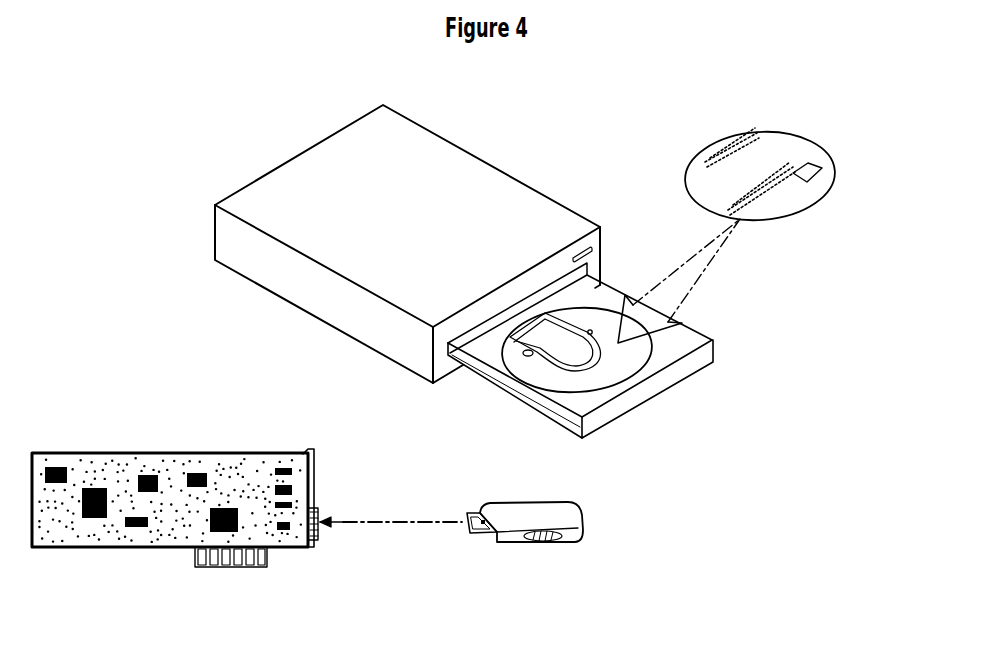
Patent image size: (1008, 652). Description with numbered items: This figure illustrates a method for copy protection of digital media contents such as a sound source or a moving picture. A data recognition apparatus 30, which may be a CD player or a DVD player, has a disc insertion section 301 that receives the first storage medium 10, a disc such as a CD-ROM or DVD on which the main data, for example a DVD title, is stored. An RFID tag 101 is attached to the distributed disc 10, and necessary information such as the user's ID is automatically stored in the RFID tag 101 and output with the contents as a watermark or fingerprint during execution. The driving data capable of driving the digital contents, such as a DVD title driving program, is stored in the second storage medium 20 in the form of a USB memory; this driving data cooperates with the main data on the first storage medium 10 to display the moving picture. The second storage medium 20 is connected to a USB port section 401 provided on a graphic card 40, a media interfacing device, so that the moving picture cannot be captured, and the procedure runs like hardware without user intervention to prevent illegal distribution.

The data recognition apparatus 30 is at (483, 160).
The first storage medium 10 is at (700, 151).
The RFID tag 101 is at (818, 166).
The disc insertion section 301 is at (683, 384).
The graphic card 40 is at (90, 540).
The USB port section 401 is at (313, 540).
The second storage medium 20 is at (510, 542).